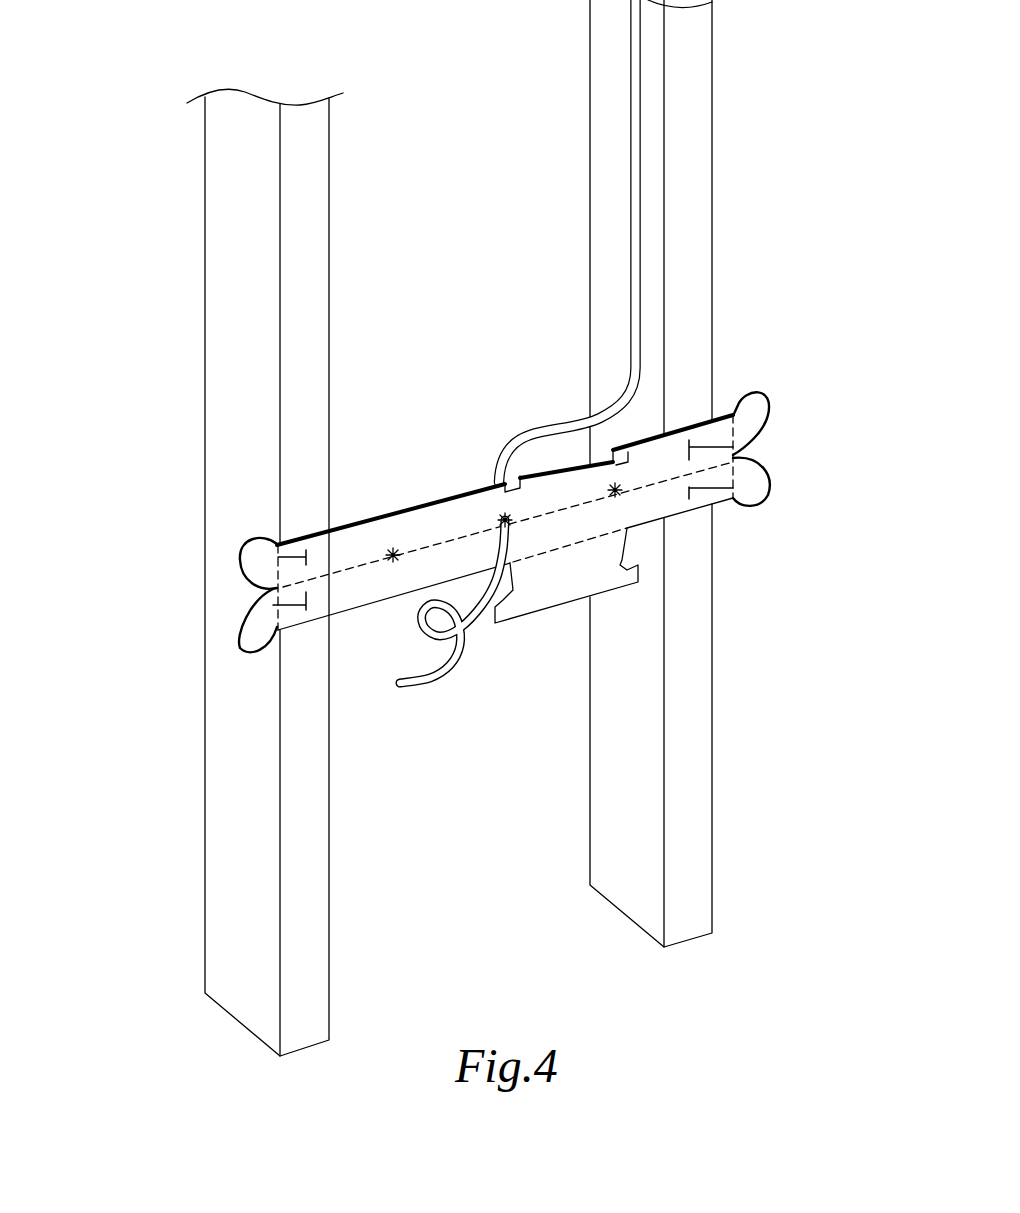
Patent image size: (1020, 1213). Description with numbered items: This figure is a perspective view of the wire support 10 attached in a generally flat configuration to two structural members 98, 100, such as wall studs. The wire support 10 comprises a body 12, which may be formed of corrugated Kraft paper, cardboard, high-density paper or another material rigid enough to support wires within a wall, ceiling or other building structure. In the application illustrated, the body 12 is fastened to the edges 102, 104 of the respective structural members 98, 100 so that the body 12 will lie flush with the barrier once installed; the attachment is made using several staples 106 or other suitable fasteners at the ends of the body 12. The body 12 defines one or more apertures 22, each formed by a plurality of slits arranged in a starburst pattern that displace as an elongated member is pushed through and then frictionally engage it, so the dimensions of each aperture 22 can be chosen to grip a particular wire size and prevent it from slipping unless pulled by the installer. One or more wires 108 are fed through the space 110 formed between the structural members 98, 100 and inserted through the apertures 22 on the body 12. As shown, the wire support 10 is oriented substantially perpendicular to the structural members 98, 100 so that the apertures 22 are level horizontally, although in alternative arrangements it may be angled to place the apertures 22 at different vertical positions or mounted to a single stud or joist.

The wire support 10 is at (411, 471).
The body 12 is at (356, 494).
The apertures 22 is at (535, 531).
The structural member 98 is at (246, 166).
The structural member 100 is at (710, 40).
The edge 102 is at (300, 214).
The edge 104 is at (693, 90).
The staples 106 is at (306, 557).
The wires 108 is at (633, 372).
The space 110 is at (548, 315).